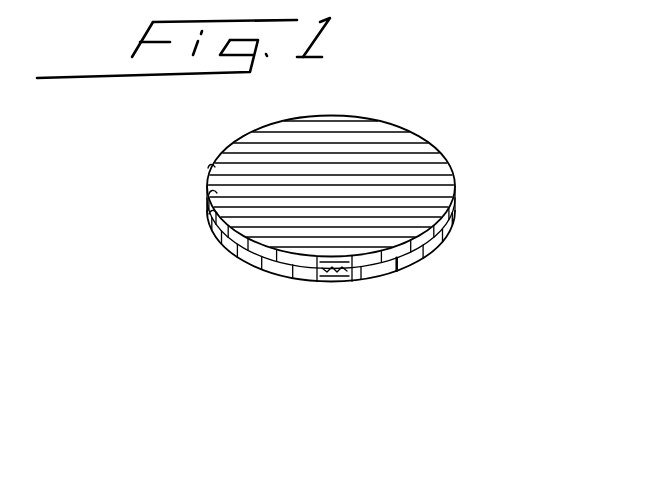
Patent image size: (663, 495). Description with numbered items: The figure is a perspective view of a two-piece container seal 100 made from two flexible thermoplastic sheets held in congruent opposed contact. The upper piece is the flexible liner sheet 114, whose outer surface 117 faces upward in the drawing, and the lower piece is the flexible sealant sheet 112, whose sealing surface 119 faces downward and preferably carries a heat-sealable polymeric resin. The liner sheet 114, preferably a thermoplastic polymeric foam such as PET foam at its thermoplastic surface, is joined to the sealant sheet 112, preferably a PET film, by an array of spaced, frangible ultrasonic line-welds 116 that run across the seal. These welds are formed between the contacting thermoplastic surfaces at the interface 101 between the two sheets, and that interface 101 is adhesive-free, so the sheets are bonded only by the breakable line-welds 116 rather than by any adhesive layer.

The two-piece container seal 100 is at (432, 128).
The interface 101 is at (397, 270).
The flexible sealant sheet 112 is at (452, 233).
The flexible liner sheet 114 is at (453, 215).
The frangible ultrasonic line-welds 116 is at (217, 213).
The outer surface 117 is at (283, 170).
The sealing surface 119 is at (336, 290).